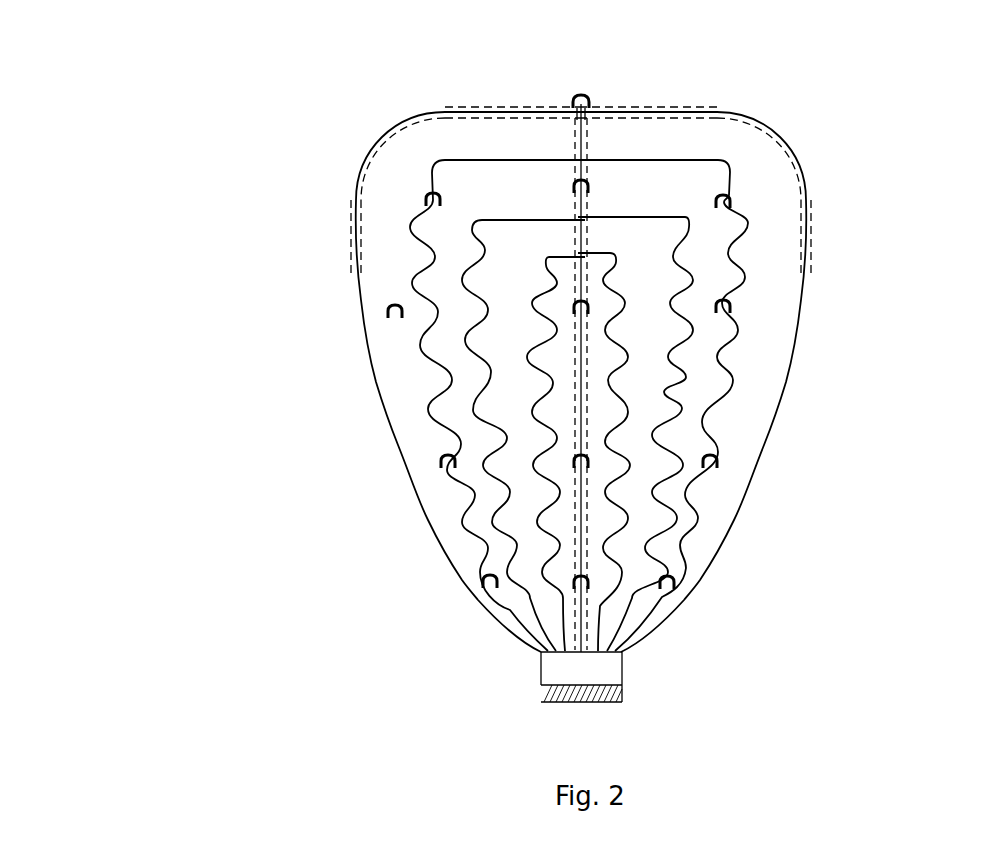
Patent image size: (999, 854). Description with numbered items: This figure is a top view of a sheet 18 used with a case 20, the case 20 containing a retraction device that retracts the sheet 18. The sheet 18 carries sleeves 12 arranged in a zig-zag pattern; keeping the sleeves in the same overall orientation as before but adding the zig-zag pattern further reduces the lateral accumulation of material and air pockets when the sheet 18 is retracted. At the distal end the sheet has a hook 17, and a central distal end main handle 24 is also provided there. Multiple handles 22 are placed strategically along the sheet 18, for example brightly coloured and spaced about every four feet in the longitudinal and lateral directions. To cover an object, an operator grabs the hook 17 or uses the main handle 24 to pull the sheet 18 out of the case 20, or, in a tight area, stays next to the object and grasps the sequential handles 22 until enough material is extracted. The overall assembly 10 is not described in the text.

The lighting device 10 is at (313, 183).
The sleeves 12 is at (700, 525).
The hook 17 is at (586, 95).
The sheet 18 is at (410, 389).
The case 20 is at (603, 672).
The handles 22 is at (712, 462).
The central distal end main handle 24 is at (572, 98).